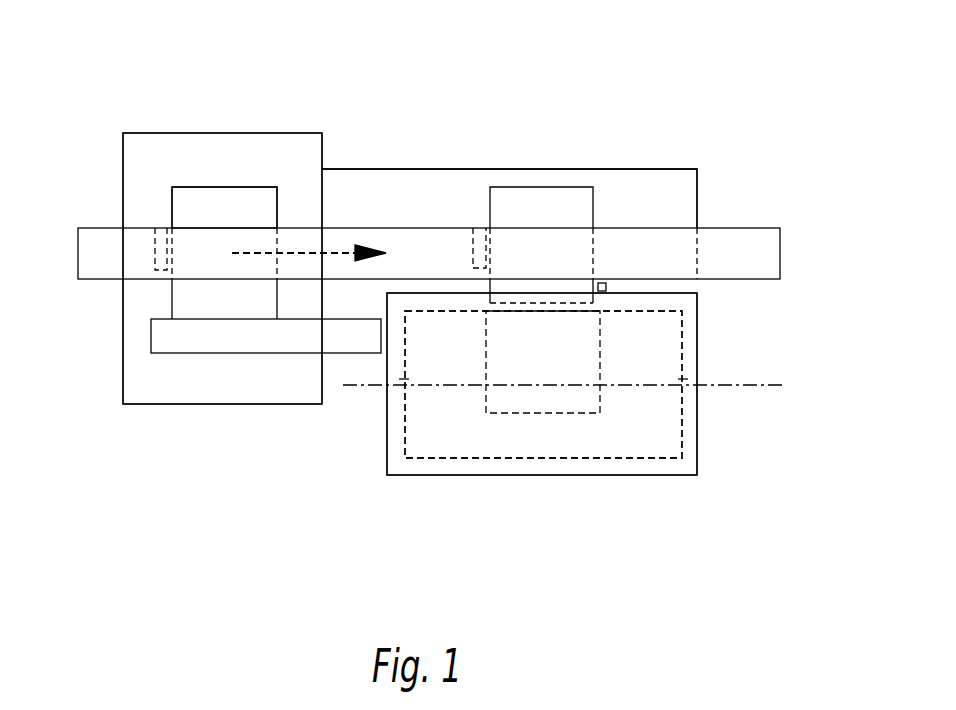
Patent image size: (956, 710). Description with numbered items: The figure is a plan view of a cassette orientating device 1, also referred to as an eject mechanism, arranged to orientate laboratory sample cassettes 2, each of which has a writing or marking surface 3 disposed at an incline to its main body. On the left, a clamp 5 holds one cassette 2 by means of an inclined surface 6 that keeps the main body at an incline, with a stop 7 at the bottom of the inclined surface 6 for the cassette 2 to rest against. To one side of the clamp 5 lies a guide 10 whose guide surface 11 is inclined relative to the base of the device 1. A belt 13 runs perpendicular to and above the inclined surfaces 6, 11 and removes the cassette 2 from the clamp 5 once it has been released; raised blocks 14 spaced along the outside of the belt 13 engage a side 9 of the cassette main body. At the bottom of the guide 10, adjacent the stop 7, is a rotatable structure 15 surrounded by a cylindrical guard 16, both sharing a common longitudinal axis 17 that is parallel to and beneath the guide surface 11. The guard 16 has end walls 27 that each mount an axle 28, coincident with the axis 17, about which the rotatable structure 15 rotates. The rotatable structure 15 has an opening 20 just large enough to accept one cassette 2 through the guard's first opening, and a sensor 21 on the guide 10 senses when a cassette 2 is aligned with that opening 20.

The device 1 is at (749, 110).
The laboratory sample cassette 2 is at (189, 184).
The marking surface 3 is at (639, 106).
The clamp 5 is at (124, 351).
The inclined surface 6 is at (312, 153).
The stop 7 is at (187, 354).
The side of the main body 9 is at (172, 206).
The guide 10 is at (697, 200).
The guide surface 11 is at (443, 188).
The belt 13 is at (665, 228).
The raised blocks 14 is at (155, 250).
The rotatable structure 15 is at (663, 440).
The cylindrical guard 16 is at (430, 476).
The longitudinal axis 17 is at (750, 386).
The opening 20 is at (543, 404).
The sensor 21 is at (600, 283).
The end walls 27 is at (697, 327).
The axles 28 is at (688, 376).